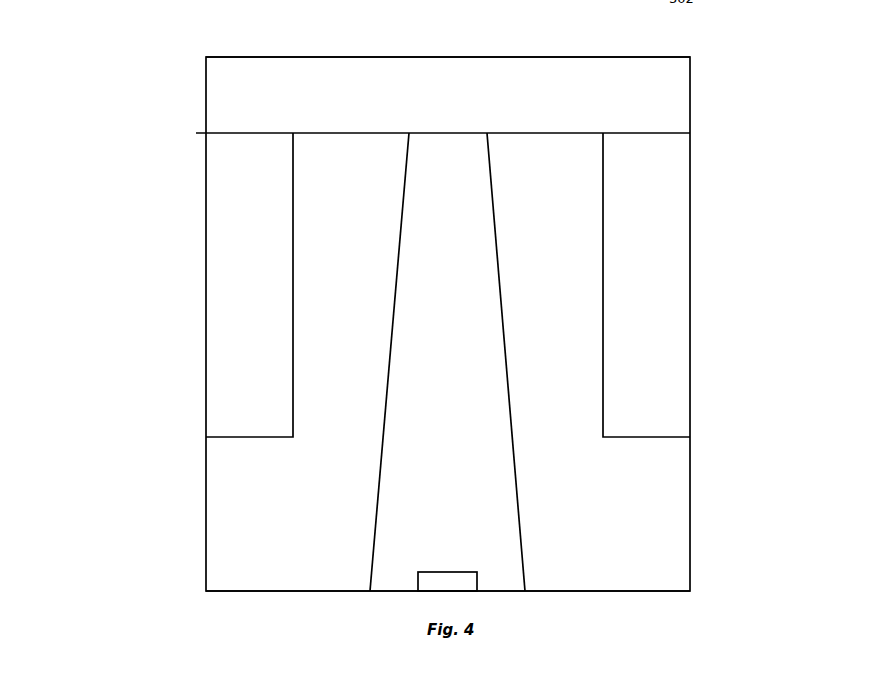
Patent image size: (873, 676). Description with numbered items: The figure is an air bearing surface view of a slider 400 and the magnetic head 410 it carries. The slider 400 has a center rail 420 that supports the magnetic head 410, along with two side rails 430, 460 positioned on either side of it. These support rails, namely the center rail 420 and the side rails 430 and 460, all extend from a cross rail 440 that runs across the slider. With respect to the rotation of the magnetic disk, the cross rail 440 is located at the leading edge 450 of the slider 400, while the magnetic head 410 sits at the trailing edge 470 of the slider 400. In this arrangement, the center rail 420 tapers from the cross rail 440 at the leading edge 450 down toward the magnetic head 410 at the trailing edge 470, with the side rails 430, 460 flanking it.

The slider 400 is at (80, 543).
The magnetic head 410 is at (438, 582).
The center rail 420 is at (418, 430).
The side rail 430 is at (245, 258).
The cross rail 440 is at (245, 86).
The leading edge 450 is at (275, 57).
The side rail 460 is at (669, 277).
The trailing edge 470 is at (601, 592).